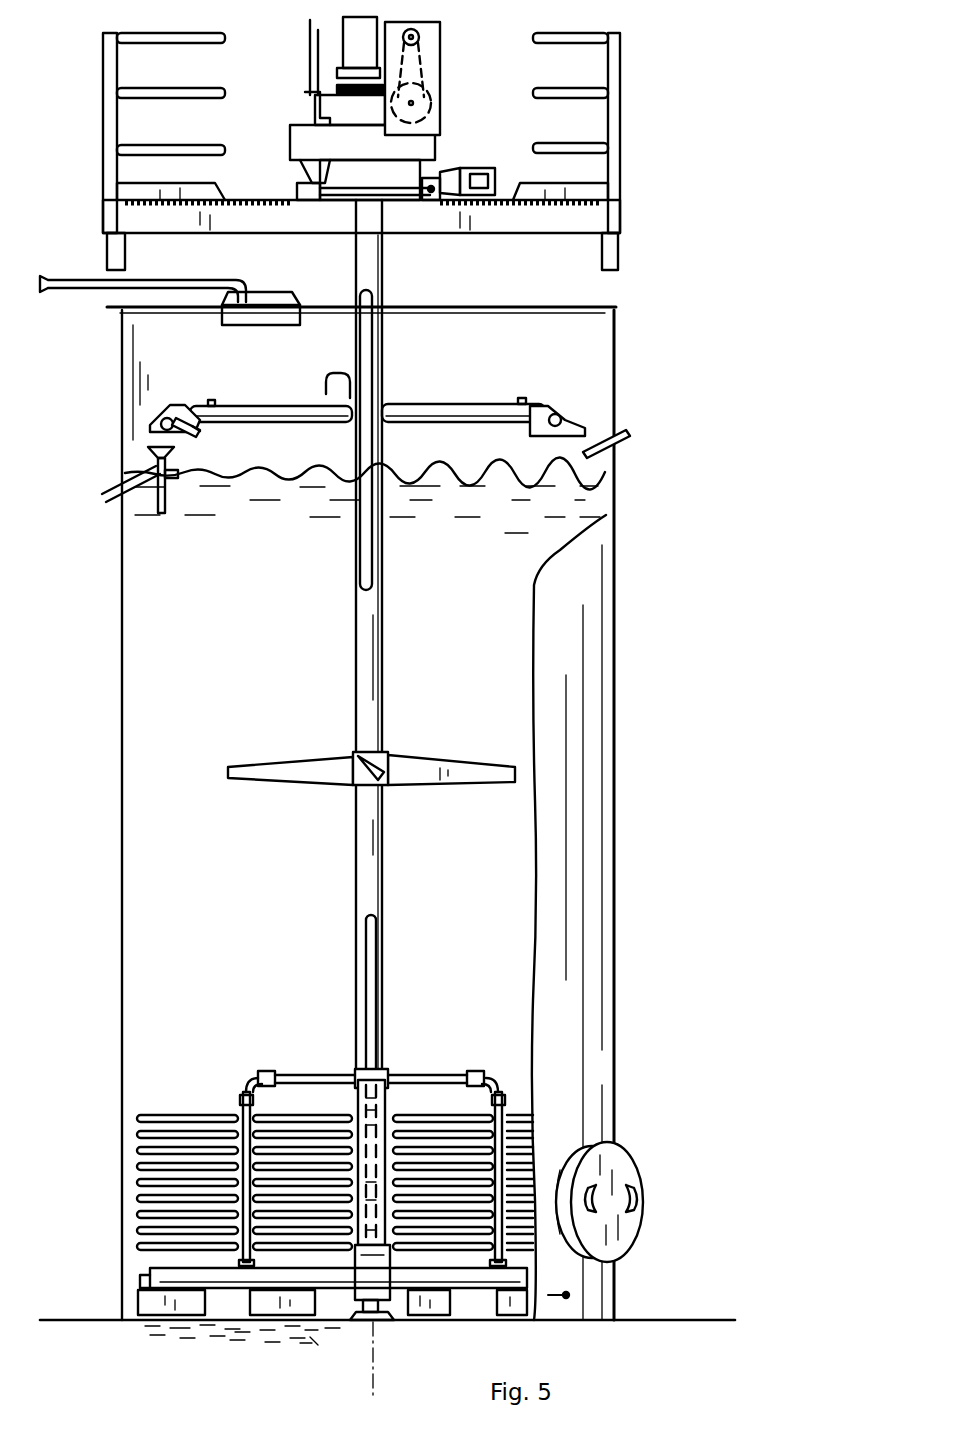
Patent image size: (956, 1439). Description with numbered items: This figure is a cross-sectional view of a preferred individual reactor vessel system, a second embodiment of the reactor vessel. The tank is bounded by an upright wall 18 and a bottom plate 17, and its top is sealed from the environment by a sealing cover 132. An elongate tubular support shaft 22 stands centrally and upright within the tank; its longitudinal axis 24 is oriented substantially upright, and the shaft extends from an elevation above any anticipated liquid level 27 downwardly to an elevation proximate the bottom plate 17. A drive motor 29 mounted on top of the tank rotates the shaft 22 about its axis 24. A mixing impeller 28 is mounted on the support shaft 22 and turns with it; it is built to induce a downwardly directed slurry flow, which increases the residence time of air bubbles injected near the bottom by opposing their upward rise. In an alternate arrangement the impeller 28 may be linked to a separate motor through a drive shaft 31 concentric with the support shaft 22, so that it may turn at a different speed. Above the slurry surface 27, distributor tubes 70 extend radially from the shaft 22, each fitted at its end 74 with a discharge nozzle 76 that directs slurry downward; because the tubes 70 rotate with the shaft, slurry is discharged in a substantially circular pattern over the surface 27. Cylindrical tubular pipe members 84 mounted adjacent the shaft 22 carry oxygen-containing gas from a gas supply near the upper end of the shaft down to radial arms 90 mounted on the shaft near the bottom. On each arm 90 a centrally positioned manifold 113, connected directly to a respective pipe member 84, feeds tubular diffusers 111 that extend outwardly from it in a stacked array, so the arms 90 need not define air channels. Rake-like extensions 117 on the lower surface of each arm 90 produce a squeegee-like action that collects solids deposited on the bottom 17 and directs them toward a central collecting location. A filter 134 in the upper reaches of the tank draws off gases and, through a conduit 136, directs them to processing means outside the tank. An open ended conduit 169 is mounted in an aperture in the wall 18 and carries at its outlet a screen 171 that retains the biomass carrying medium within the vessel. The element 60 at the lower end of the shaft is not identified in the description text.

The bottom plate 17 is at (350, 1322).
The upright wall 18 is at (122, 893).
The support shaft 22 is at (378, 880).
The longitudinal axis 24 is at (380, 1376).
The liquid level 27 is at (505, 478).
The mixing impeller 28 is at (288, 786).
The drive motor 29 is at (440, 103).
The drive shaft 31 is at (370, 695).
The bottom bearing housing 60 is at (372, 1160).
The distributor tube 70 is at (262, 410).
The end 74 is at (190, 405).
The discharge nozzle 76 is at (192, 436).
The tubular pipe member 84 is at (372, 546).
The arm 90 is at (170, 1280).
The tubular diffuser 111 is at (188, 1115).
The manifold 113 is at (290, 1071).
The rake-like extension 117 is at (255, 1310).
The sealing cover 132 is at (578, 301).
The filter 134 is at (262, 292).
The conduit 136 is at (62, 280).
The conduit 169 is at (148, 455).
The screen 171 is at (622, 441).